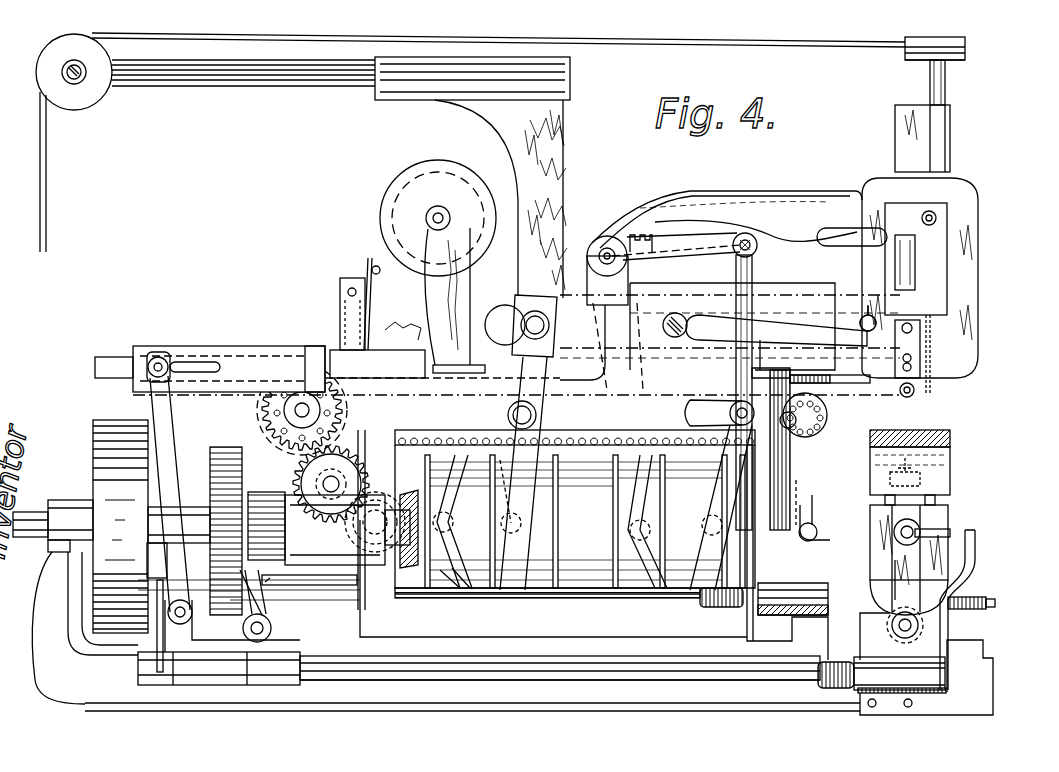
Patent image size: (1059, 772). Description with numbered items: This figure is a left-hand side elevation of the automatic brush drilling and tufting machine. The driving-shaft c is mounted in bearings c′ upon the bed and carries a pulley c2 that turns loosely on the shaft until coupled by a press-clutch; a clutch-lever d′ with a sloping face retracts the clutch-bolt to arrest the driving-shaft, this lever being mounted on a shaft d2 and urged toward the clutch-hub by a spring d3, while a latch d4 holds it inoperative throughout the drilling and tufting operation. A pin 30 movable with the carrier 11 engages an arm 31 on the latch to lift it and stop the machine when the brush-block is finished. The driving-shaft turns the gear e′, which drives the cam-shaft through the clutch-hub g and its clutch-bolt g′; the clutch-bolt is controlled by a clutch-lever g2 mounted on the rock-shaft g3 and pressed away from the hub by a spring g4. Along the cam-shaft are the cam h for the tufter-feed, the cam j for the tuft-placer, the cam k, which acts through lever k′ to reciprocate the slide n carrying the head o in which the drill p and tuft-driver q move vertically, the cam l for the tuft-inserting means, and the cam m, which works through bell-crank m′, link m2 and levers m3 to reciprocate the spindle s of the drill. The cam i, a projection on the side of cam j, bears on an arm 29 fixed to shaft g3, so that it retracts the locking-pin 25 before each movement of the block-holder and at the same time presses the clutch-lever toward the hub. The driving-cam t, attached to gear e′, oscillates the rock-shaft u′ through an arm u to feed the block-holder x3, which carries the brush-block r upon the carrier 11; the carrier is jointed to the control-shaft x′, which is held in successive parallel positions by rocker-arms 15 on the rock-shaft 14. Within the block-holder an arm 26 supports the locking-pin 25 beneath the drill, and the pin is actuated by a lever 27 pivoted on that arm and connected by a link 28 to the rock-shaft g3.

The drill-spindle s is at (930, 80).
The head o is at (978, 262).
The drill p is at (935, 390).
The tuft-driver q is at (900, 398).
The levers m3 is at (687, 192).
The boring cam m is at (656, 413).
The link m2 is at (752, 272).
The bell-crank m′ is at (706, 400).
The slide n is at (500, 312).
The lever k′ is at (540, 412).
The cam i is at (430, 500).
The tuft-placer cam j is at (452, 521).
The cam k is at (523, 496).
The cam l is at (626, 521).
The spring g4 is at (702, 606).
The rock-shaft g3 is at (555, 592).
The arm 29 is at (440, 572).
The clutch-hub g is at (268, 475).
The clutch-bolt g′ is at (300, 515).
The gear e′ is at (226, 447).
The driving-cam t is at (258, 520).
The clutch-lever g2 is at (290, 585).
The driving-shaft c is at (30, 512).
The bearings c′ is at (70, 500).
The pulley c2 is at (112, 418).
The cam h is at (165, 480).
The arm u is at (232, 626).
The rock-shaft u′ is at (254, 635).
The clutch-lever d′ is at (155, 633).
The shaft d2 is at (490, 674).
The spring d3 is at (830, 688).
The latch d4 is at (948, 603).
The arm 26 is at (790, 470).
The lever 27 is at (865, 482).
The link 28 is at (862, 506).
The brush-block r is at (950, 442).
The block-holder x3 is at (950, 460).
The locking-pin 25 is at (915, 464).
The carrier 11 is at (950, 522).
The control-shaft x′ is at (894, 532).
The rocker-arms 15 is at (893, 580).
The rock-shaft 14 is at (892, 627).
The pin 30 is at (950, 537).
The arm 31 is at (975, 563).